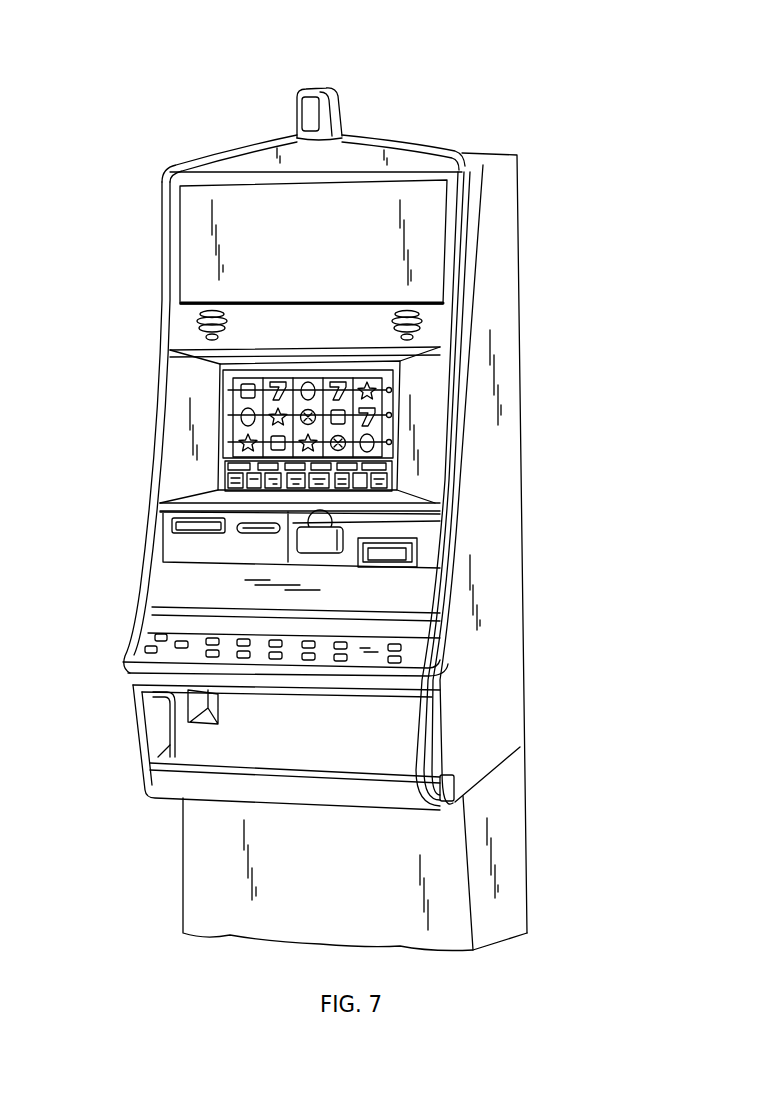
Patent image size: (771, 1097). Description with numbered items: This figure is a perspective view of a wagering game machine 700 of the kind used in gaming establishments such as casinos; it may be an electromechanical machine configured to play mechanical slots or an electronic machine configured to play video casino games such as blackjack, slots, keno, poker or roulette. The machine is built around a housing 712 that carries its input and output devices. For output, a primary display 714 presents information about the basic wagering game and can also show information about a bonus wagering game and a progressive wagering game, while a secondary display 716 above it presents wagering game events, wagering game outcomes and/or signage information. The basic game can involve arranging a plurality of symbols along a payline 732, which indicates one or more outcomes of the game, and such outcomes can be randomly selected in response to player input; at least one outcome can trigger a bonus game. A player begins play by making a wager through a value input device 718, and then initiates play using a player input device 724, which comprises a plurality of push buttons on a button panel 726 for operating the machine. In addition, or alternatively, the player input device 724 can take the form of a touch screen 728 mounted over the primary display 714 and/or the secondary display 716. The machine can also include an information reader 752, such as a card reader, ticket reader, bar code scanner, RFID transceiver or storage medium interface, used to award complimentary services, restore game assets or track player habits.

The wagering game machine 700 is at (100, 69).
The housing 712 is at (497, 185).
The secondary display 716 is at (230, 258).
The payline 732 is at (235, 371).
The touch screen 728 is at (393, 488).
The primary display 714 is at (220, 442).
The value input device 718 is at (413, 555).
The information reader 752 is at (243, 532).
The button panel 726 is at (200, 651).
The player input device 724 is at (403, 647).